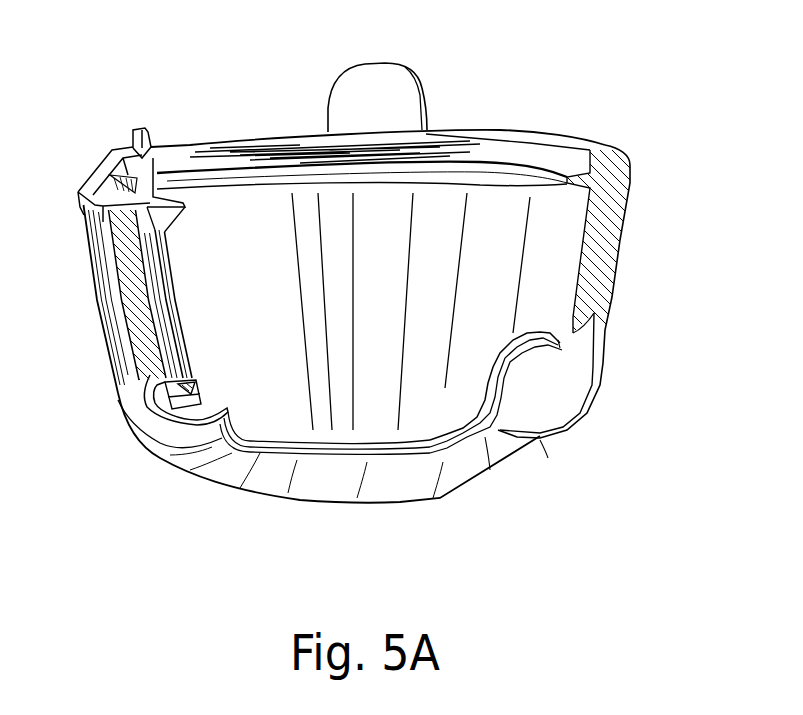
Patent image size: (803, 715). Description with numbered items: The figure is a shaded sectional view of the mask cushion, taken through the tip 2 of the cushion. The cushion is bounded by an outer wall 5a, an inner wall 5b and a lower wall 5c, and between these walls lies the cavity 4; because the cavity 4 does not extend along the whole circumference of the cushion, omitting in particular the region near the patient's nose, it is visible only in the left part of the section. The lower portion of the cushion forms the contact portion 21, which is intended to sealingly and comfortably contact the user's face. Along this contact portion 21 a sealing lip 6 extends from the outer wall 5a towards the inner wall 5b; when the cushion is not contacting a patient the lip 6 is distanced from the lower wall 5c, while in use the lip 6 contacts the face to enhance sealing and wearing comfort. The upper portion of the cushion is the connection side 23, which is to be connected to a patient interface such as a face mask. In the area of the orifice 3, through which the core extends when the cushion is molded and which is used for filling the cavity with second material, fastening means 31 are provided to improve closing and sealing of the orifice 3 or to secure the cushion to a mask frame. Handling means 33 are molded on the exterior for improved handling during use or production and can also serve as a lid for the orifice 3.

The tip 2 is at (628, 157).
The connection side 23 is at (283, 100).
The handling means 33 is at (391, 99).
The orifice 3 is at (87, 130).
The fastening means 31 is at (147, 130).
The outer wall 5a is at (122, 303).
The cavity 4 is at (143, 338).
The inner wall 5b is at (176, 300).
The lower wall 5c is at (205, 388).
The sealing lip 6 is at (538, 440).
The contact portion 21 is at (263, 541).